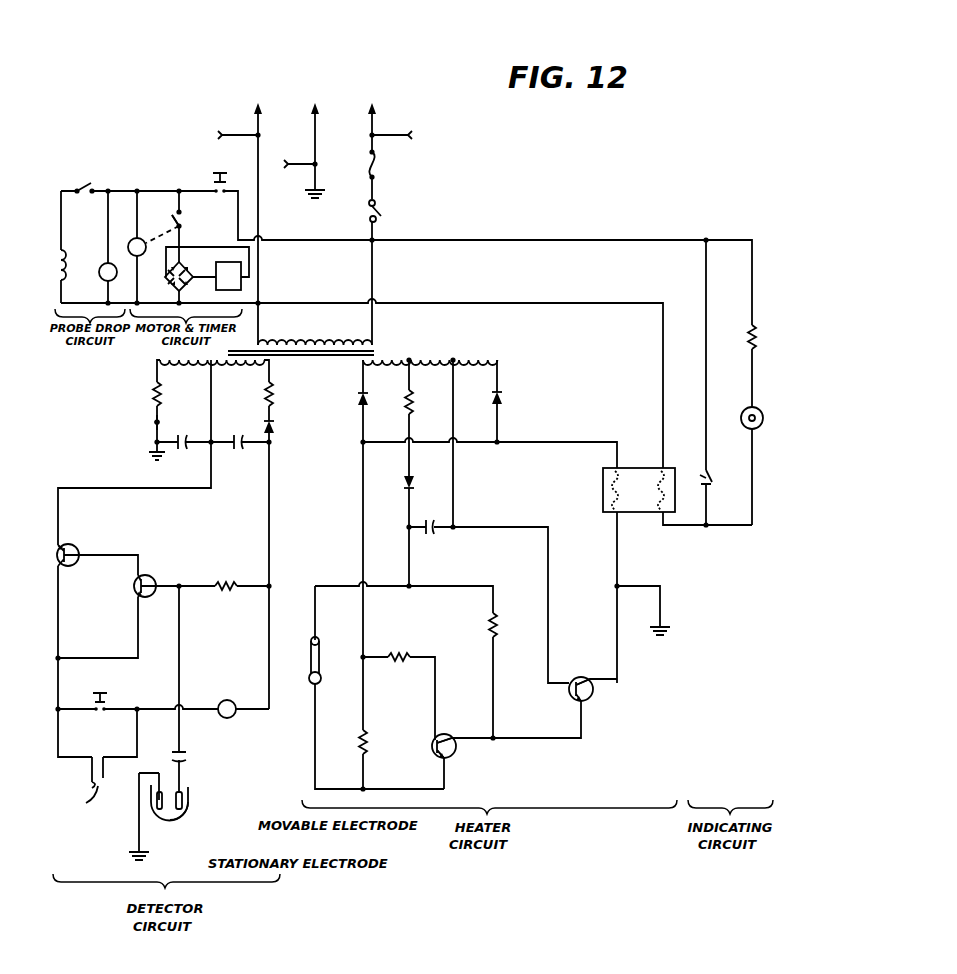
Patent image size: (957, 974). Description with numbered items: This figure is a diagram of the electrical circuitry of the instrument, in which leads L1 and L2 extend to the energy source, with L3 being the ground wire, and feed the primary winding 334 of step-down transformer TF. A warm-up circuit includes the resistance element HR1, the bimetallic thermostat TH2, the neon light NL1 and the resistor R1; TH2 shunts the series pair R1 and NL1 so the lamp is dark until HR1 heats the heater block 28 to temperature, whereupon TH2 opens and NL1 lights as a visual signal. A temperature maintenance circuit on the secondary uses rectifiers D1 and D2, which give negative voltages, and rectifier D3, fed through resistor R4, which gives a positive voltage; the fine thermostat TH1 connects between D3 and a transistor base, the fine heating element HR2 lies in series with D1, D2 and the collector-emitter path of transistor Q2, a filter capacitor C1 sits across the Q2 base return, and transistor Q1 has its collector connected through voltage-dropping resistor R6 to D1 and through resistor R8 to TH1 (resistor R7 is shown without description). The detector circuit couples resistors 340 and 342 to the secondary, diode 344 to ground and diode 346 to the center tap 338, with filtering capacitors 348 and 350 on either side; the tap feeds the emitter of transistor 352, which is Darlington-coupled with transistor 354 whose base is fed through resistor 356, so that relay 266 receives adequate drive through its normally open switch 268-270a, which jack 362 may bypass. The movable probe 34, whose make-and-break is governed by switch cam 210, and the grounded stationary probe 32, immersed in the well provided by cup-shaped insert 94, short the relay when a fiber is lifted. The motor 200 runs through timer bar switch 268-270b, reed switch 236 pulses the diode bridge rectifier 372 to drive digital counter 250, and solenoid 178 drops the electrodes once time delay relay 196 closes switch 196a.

The input terminal lead L1 is at (387, 214).
The input terminal lead L2 is at (240, 214).
The ground wire L3 is at (301, 136).
The release relay solenoid 178 is at (57, 266).
The time delay relay 196 is at (102, 265).
The time delay switch 196a is at (118, 177).
The motor 200 is at (133, 240).
The reed switch 236 is at (184, 221).
The digital counter 250 is at (245, 288).
The diode bridge rectifier 372 is at (168, 284).
The timer bar switch 268-270b is at (214, 183).
The timer bar relay switch 268-270a is at (137, 693).
The primary winding 334 is at (306, 343).
The step down transformer TF is at (412, 352).
The center tap 338 is at (207, 370).
The resistor 340 is at (152, 398).
The resistor 342 is at (275, 394).
The rectifying diode 344 is at (155, 422).
The diode 346 is at (275, 430).
The filtering capacitor 348 is at (181, 452).
The filtering capacitor 350 is at (238, 452).
The transistor 352 is at (56, 549).
The transistor 354 is at (134, 590).
The resistor 356 is at (214, 585).
The relay 266 is at (237, 700).
The switch cam 210 is at (187, 767).
The jack 362 is at (92, 793).
The movable electrode 34 is at (190, 806).
The cup-shaped insert 94 is at (185, 818).
The stationary electrode 32 is at (170, 808).
The first thermostat TH1 is at (308, 673).
The rectifier D1 is at (358, 400).
The rectifier D2 is at (504, 398).
The rectifier D3 is at (404, 482).
The resistor R4 is at (414, 408).
The filter capacitor C1 is at (426, 534).
The voltage-dropping resistor R6 is at (397, 665).
The resistor R7 is at (498, 622).
The resistor R8 is at (369, 741).
The transistor Q1 is at (456, 755).
The transistor Q2 is at (593, 698).
The heater block 28 is at (597, 470).
The first heating element HR1 is at (656, 513).
The second heating element HR2 is at (605, 506).
The resistor R1 is at (757, 343).
The neon light NL1 is at (760, 428).
The second thermostat TH2 is at (710, 477).